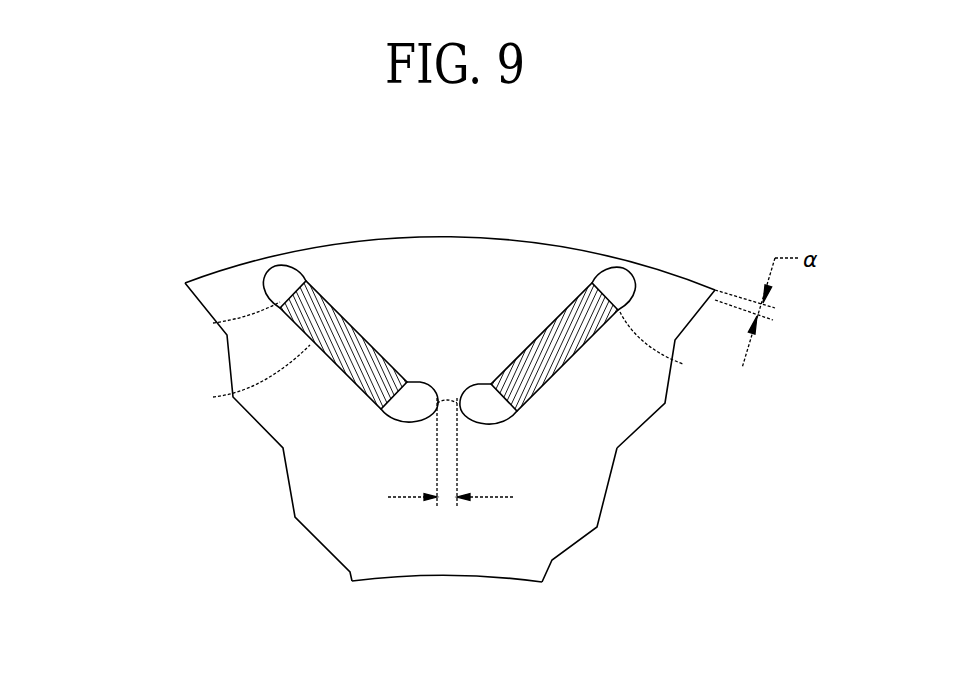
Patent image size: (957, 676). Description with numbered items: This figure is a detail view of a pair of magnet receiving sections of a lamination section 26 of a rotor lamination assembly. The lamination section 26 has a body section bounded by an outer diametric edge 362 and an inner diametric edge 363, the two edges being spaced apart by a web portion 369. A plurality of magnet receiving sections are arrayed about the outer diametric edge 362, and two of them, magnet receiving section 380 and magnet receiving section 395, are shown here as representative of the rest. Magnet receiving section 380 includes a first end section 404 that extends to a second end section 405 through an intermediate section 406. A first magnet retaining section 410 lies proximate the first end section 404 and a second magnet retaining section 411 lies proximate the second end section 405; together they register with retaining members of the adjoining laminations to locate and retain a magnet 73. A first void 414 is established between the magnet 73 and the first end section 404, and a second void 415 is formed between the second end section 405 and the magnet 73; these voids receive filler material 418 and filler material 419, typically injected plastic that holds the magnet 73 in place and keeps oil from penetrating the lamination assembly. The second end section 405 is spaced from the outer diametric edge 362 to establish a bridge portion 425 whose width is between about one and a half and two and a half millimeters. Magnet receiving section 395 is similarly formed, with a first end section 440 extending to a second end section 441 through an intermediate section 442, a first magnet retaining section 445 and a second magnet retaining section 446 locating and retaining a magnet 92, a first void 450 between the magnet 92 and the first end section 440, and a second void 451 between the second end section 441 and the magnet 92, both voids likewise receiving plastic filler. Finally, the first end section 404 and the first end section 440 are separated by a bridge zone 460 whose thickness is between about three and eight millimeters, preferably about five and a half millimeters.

The lamination section 26 is at (208, 172).
The outer diametric edge 362 is at (457, 237).
The inner diametric edge 363 is at (490, 582).
The web portion 369 is at (540, 527).
The magnet receiving section 380 is at (600, 386).
The magnet 92 is at (327, 302).
The magnet 73 is at (570, 305).
The second void 451 is at (286, 263).
The second end section 441 is at (265, 268).
The second magnet retaining section 446 is at (213, 323).
The magnet receiving section 395 is at (264, 343).
The intermediate section 442 is at (213, 397).
The first magnet retaining section 445 is at (422, 383).
The first void 450 is at (391, 405).
The first end section 404 is at (430, 420).
The first end section 440 is at (437, 410).
The bridge zone 460 is at (477, 447).
The second void 415 is at (642, 298).
The second end section 405 is at (622, 272).
The bridge portion 425 is at (628, 272).
The filler material 419 is at (604, 283).
The second magnet retaining section 411 is at (675, 349).
The intermediate section 406 is at (541, 334).
The first magnet retaining section 410 is at (487, 382).
The first void 414 is at (503, 414).
The filler material 418 is at (478, 413).